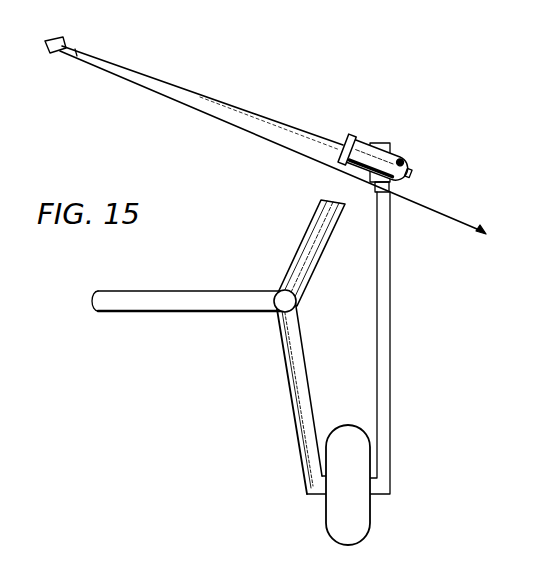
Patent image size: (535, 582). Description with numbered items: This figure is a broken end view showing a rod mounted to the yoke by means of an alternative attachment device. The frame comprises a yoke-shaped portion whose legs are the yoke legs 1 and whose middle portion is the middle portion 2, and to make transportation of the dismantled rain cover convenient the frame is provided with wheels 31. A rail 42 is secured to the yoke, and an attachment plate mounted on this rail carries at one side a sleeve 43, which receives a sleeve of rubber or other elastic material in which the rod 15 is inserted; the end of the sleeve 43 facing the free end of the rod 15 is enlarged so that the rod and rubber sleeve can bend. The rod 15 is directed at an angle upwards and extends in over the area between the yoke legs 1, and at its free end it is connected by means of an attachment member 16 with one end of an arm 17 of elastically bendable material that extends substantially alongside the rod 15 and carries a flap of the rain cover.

The yoke leg 1 is at (307, 230).
The middle portion of the yoke 2 is at (168, 312).
The rod 15 is at (258, 116).
The attachment member 16 is at (57, 53).
The arm 17 is at (225, 122).
The wheel 31 is at (367, 517).
The rail 42 is at (394, 186).
The sleeve 43 is at (360, 142).